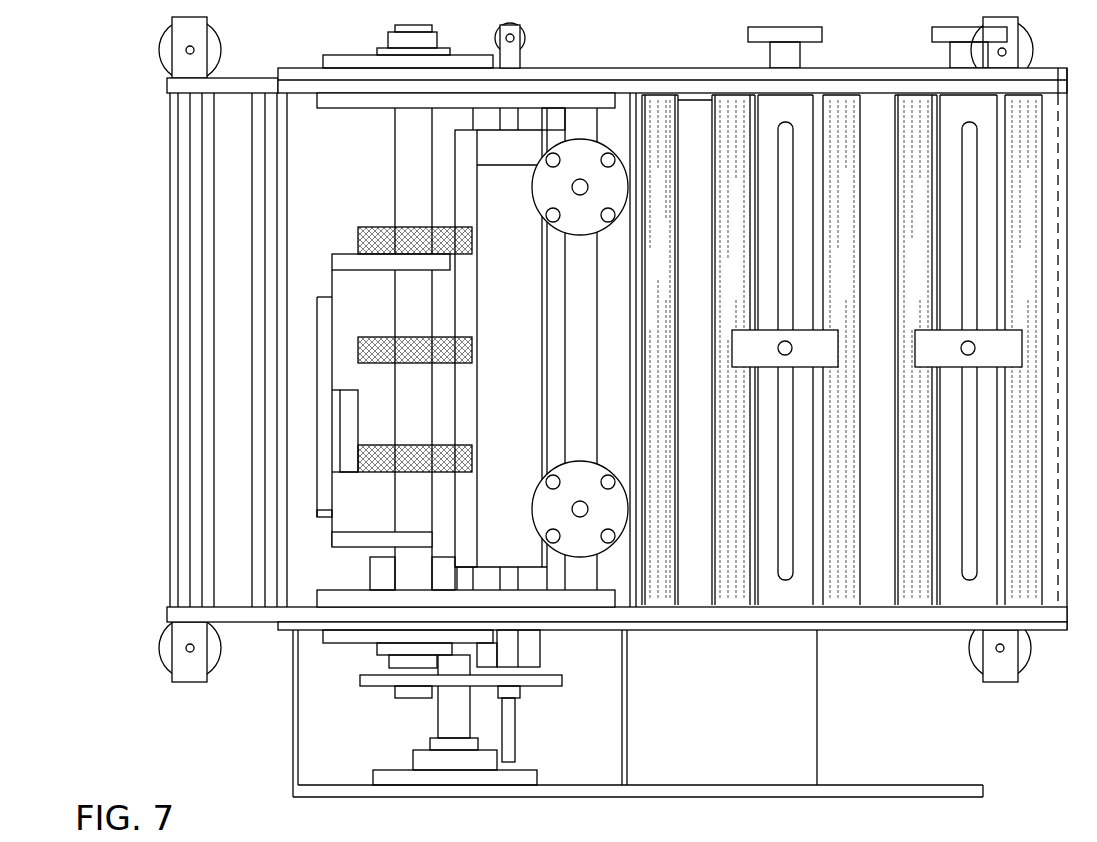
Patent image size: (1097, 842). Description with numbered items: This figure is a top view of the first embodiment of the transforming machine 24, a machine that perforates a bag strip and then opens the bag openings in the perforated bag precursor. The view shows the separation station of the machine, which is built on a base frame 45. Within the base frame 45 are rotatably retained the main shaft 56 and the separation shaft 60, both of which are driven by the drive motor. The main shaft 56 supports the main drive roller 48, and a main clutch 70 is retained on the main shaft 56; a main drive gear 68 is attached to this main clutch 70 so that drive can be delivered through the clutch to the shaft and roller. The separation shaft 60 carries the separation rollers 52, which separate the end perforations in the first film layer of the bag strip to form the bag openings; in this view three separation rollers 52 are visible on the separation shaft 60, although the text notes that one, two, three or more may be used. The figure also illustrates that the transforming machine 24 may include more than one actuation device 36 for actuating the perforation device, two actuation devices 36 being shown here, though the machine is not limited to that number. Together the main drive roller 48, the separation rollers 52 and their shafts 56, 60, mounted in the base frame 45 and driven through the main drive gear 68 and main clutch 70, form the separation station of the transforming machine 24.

The transforming machine 24 is at (138, 428).
The actuation device 36 is at (586, 148).
The base frame 45 is at (892, 630).
The main drive roller 48 is at (465, 128).
The separation roller 52 is at (462, 242).
The main shaft 56 is at (508, 700).
The separation shaft 60 is at (395, 167).
The main drive gear 68 is at (547, 686).
The main clutch 70 is at (535, 643).